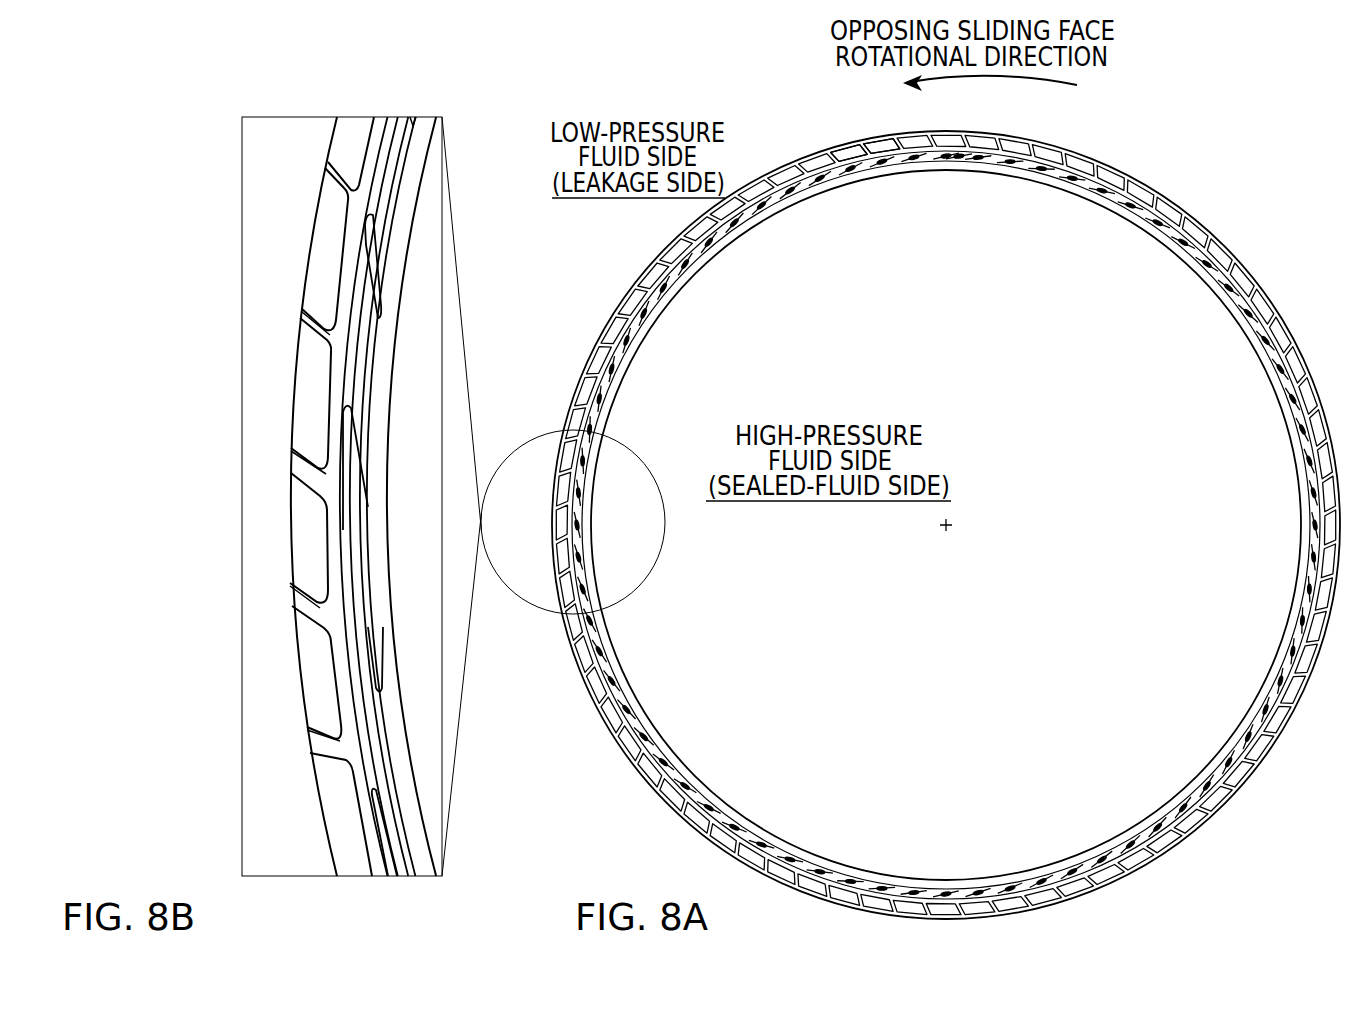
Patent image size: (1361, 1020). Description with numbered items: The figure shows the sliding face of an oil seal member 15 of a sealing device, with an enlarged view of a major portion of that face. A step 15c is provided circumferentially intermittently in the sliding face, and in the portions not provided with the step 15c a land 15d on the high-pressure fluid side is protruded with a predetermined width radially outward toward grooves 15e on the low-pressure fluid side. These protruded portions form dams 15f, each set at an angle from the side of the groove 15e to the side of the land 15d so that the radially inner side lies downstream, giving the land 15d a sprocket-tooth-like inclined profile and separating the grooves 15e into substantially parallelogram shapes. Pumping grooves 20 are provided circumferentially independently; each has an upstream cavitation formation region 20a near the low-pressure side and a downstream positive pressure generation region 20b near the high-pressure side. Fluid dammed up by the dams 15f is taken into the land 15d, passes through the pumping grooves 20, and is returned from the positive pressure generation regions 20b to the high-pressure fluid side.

In FIG. 8A, the oil seal member 15 is at (1105, 167).
In FIG. 8B, the oil seal member 15 is at (363, 496).
In FIG. 8A, the step 15c is at (833, 150).
In FIG. 8B, the step 15c is at (325, 292).
In FIG. 8A, the land 15d is at (958, 157).
In FIG. 8B, the land 15d is at (405, 187).
In FIG. 8A, the groove 15e is at (840, 152).
In FIG. 8B, the groove 15e is at (317, 257).
In FIG. 8A, the dam 15f is at (848, 150).
In FIG. 8B, the dam 15f is at (310, 337).
In FIG. 8A, the pumping groove 20 is at (1186, 256).
In FIG. 8B, the pumping groove 20 is at (393, 320).
In FIG. 8B, the cavitation formation region 20a is at (363, 217).
In FIG. 8B, the positive pressure generation region 20b is at (366, 490).